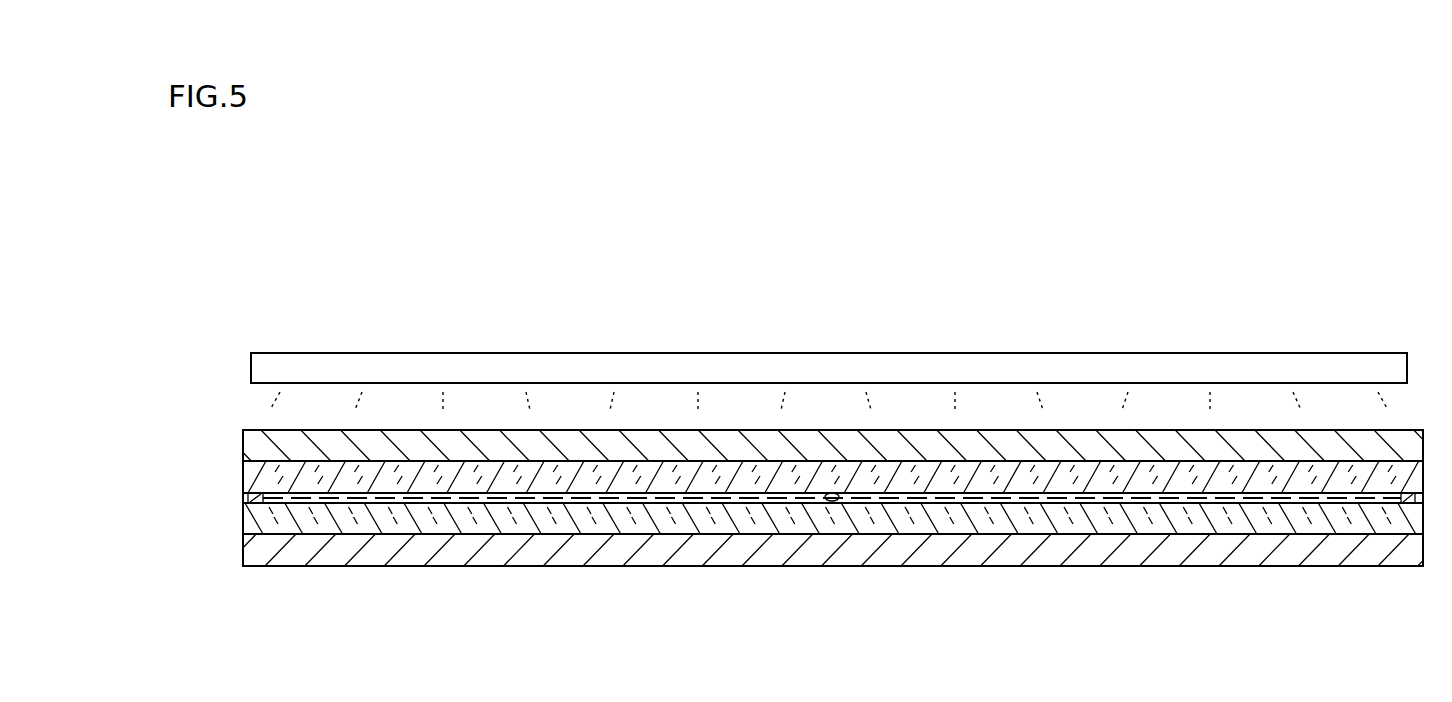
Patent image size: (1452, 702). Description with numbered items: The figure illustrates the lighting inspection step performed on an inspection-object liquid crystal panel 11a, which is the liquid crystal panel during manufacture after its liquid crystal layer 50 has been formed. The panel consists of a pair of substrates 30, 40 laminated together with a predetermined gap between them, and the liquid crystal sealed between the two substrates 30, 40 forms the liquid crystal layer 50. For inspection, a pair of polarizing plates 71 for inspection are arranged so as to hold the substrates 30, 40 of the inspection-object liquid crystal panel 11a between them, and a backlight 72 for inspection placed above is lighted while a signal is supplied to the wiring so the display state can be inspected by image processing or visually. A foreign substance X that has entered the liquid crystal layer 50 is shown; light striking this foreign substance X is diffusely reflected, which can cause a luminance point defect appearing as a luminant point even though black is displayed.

The polarizing plates for inspection 71 is at (346, 547).
The backlight for inspection 72 is at (1033, 365).
The substrate 30 is at (1185, 473).
The substrate 40 is at (1087, 523).
The liquid crystal layer 50 is at (1008, 497).
The foreign substance X is at (828, 500).
The inspection-object liquid crystal panel 11a is at (237, 462).